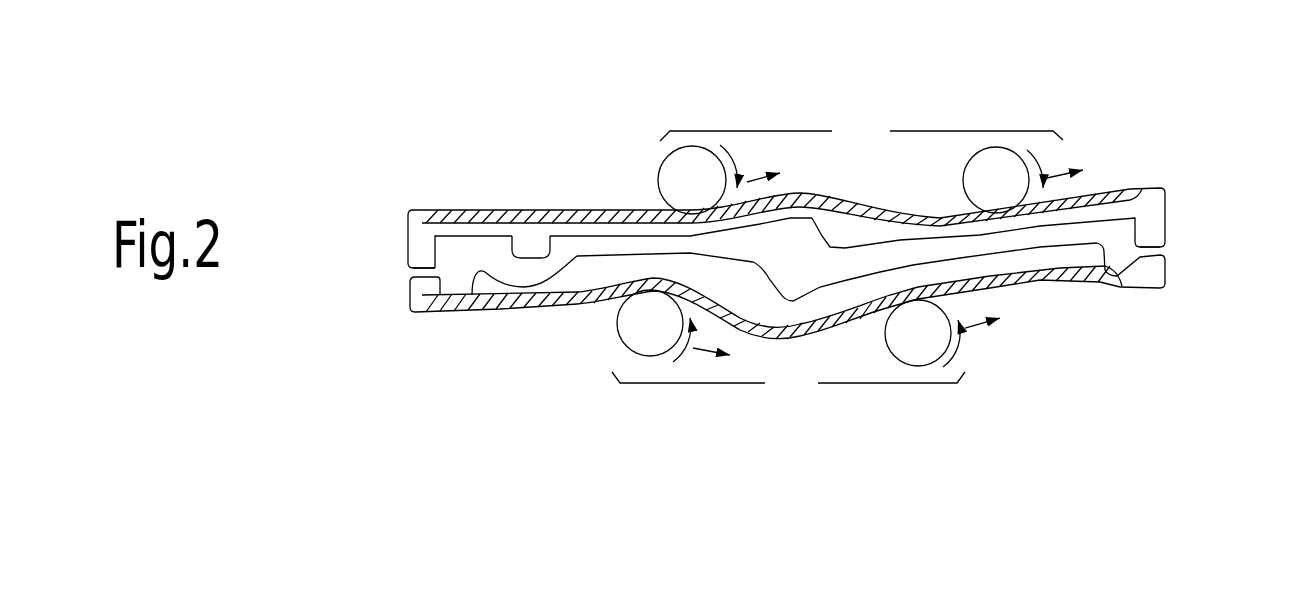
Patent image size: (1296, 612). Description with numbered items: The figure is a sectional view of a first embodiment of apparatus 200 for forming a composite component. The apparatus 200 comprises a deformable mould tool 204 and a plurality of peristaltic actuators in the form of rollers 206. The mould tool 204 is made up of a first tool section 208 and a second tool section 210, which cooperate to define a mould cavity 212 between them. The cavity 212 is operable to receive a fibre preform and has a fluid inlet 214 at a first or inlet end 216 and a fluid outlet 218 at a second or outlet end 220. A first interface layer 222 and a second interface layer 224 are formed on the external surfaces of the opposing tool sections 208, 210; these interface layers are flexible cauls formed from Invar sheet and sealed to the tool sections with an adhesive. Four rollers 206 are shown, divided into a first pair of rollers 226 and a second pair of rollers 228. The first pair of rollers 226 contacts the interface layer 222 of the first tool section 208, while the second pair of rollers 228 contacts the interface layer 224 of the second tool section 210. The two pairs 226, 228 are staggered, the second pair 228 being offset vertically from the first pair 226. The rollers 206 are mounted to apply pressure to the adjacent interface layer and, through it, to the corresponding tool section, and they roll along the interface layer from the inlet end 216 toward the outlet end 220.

The apparatus 200 is at (977, 103).
The deformable mould tool 204 is at (400, 210).
The rollers 206 is at (711, 197).
The first tool section 208 is at (535, 230).
The second tool section 210 is at (574, 274).
The mould cavity 212 is at (833, 263).
The fluid inlet 214 is at (402, 272).
The inlet end 216 is at (410, 337).
The fluid outlet 218 is at (1177, 250).
The outlet end 220 is at (1157, 295).
The first interface layer 222 is at (1118, 192).
The second interface layer 224 is at (1085, 282).
The first pair of rollers 226 is at (861, 130).
The second pair of rollers 228 is at (788, 382).